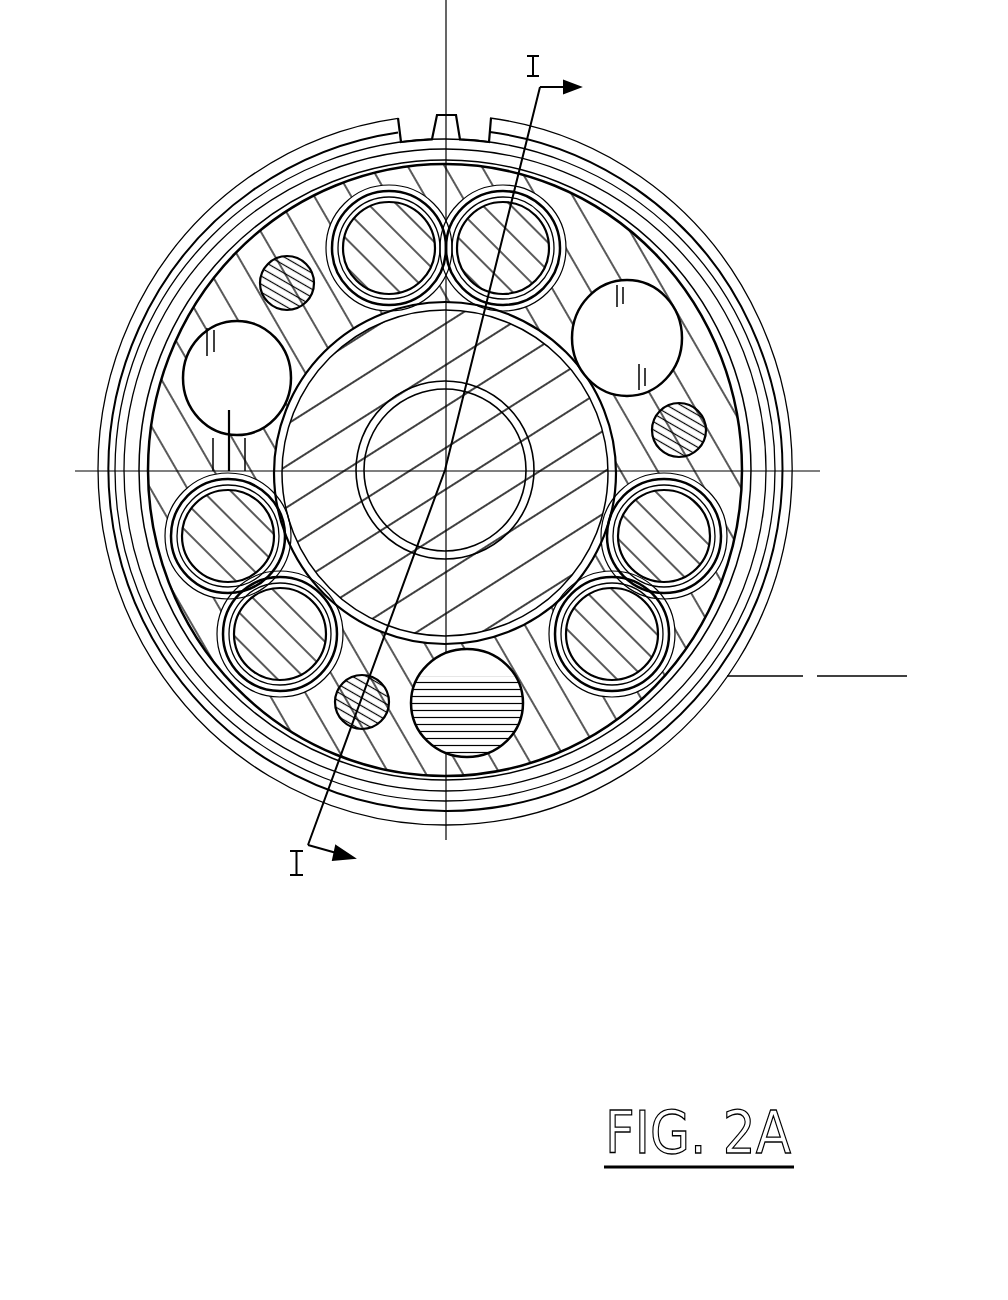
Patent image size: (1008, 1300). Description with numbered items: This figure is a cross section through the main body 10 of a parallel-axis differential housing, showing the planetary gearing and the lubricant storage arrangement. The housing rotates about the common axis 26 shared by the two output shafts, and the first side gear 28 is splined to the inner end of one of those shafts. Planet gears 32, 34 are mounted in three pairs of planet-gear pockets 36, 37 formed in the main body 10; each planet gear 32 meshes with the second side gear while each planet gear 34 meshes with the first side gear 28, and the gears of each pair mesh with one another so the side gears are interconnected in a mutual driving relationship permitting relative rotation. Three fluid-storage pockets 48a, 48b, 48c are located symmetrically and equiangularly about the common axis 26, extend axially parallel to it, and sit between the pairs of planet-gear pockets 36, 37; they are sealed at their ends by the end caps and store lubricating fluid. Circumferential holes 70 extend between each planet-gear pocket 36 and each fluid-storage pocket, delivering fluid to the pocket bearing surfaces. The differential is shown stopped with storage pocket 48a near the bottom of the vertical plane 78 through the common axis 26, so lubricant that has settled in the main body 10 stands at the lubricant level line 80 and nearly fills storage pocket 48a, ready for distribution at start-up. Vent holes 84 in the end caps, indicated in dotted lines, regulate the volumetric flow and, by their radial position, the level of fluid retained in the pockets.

The main body 10 is at (627, 243).
The common axis 26 is at (445, 470).
The first side gear 28 is at (537, 418).
The planet gear 32 is at (527, 228).
The planet gear 34 is at (344, 218).
The planet-gear pocket 36 is at (495, 191).
The planet-gear pocket 37 is at (333, 212).
The fluid-storage pocket 48a is at (478, 758).
The fluid-storage pocket 48b is at (680, 335).
The fluid-storage pocket 48c is at (203, 338).
The circumferential hole 70 is at (213, 442).
The vertical plane 78 is at (448, 40).
The lubricant level line 80 is at (842, 677).
The vent hole 84 is at (274, 390).